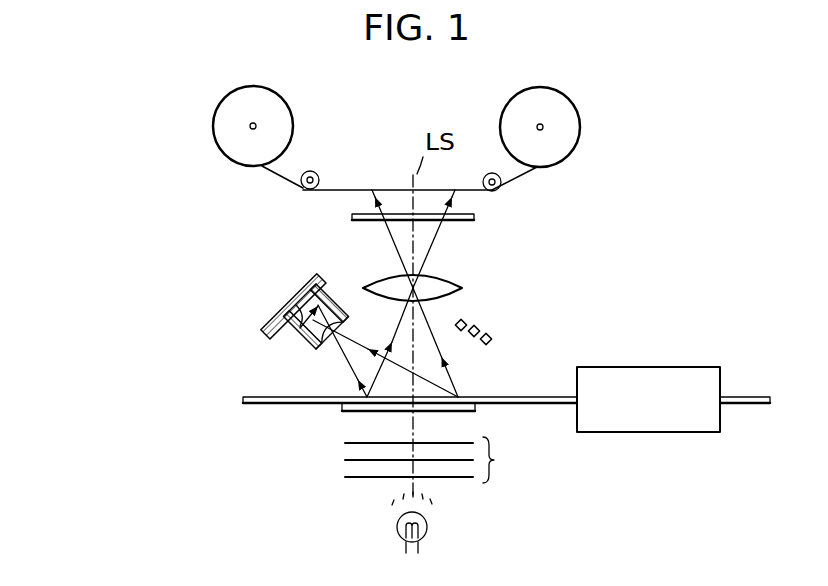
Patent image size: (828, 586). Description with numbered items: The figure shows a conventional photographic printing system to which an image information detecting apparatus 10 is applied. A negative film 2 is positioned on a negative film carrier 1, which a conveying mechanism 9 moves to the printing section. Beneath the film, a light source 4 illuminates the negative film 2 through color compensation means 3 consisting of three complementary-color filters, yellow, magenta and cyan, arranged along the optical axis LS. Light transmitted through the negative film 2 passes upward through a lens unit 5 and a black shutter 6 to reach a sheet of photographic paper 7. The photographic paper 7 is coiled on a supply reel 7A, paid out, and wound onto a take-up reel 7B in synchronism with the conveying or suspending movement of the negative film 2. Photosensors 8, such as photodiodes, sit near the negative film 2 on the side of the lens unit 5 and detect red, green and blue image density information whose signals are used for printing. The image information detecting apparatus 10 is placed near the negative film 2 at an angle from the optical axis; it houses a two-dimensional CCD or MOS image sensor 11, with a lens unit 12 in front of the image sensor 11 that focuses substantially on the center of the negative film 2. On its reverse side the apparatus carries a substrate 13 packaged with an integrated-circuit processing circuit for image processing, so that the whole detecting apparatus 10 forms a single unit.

The negative film carrier 1 is at (475, 410).
The negative film 2 is at (273, 404).
The color compensation means 3 is at (494, 460).
The light source 4 is at (397, 526).
The lens unit 5 is at (448, 276).
The black shutter 6 is at (476, 218).
The photographic paper 7 is at (334, 189).
The supply reel 7A is at (214, 116).
The take-up reel 7B is at (580, 121).
The photosensors 8 is at (463, 303).
The conveying mechanism 9 is at (698, 367).
The image information detecting apparatus 10 is at (255, 328).
The image sensor 11 is at (298, 328).
The lens unit 12 is at (343, 328).
The substrate 13 is at (294, 289).